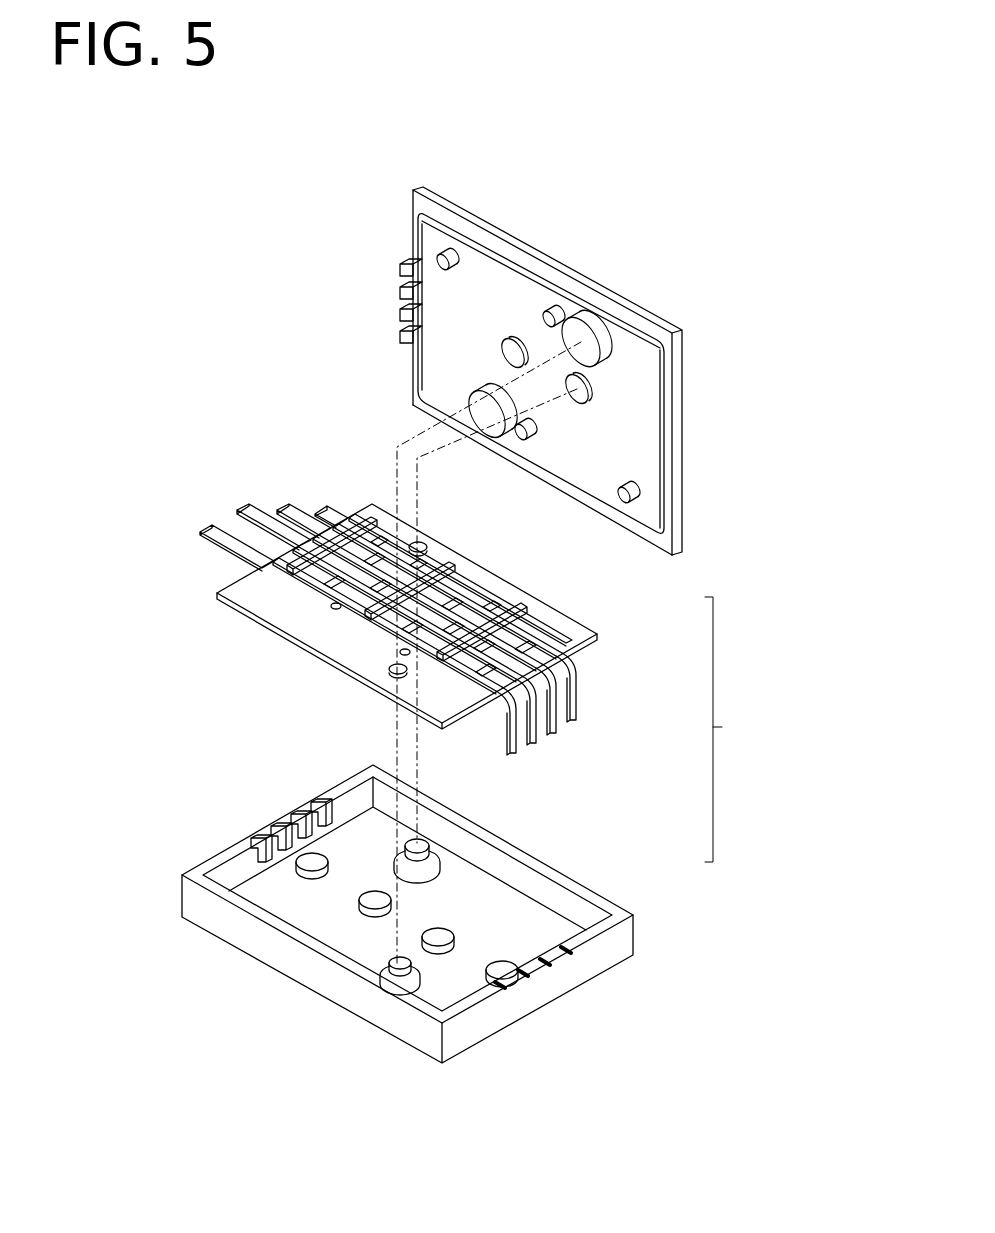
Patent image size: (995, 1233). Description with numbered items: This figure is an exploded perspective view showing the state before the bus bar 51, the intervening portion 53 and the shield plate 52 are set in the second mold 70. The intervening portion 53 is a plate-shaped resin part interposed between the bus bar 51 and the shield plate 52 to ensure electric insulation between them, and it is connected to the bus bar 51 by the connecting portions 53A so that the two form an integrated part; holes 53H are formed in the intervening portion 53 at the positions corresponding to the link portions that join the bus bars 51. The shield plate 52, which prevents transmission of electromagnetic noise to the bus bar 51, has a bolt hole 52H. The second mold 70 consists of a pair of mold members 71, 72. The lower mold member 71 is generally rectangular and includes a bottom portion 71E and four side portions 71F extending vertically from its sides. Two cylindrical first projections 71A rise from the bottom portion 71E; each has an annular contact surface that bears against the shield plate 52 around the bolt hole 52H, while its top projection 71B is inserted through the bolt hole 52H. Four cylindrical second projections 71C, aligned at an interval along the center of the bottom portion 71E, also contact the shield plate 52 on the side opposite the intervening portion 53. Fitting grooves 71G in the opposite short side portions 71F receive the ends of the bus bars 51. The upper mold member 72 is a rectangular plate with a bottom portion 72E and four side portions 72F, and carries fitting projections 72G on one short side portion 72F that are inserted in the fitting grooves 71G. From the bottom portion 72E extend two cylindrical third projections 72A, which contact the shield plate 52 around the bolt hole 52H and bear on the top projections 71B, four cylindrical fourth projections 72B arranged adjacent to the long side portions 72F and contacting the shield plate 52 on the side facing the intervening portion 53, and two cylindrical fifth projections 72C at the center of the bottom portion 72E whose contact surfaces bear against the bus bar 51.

The bus bar 51 is at (520, 752).
The shield plate 52 is at (287, 612).
The bolt hole 52H is at (428, 547).
The intervening portion 53 is at (288, 582).
The connecting portion 53A is at (372, 528).
The hole 53H is at (335, 612).
The second mold 70 is at (726, 729).
The mold member 71 is at (645, 912).
The first projection 71A is at (442, 850).
The top projection 71B is at (418, 843).
The second projection 71C is at (373, 893).
The bottom portion 71E is at (322, 932).
The side portion 71F is at (228, 856).
The fitting groove 71G is at (290, 822).
The mold member 72 is at (682, 557).
The third projection 72A is at (589, 387).
The fourth projection 72B is at (541, 320).
The fifth projection 72C is at (538, 432).
The bottom portion 72E is at (652, 434).
The side portion 72F is at (633, 533).
The fitting projection 72G is at (400, 320).